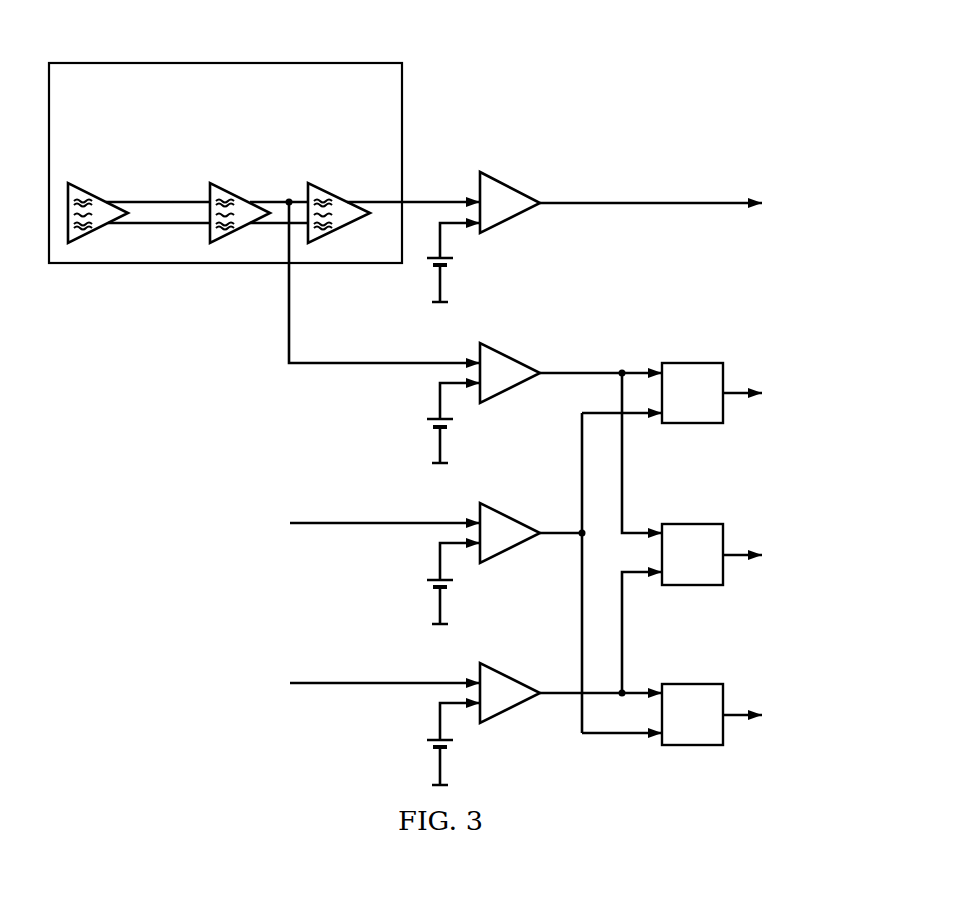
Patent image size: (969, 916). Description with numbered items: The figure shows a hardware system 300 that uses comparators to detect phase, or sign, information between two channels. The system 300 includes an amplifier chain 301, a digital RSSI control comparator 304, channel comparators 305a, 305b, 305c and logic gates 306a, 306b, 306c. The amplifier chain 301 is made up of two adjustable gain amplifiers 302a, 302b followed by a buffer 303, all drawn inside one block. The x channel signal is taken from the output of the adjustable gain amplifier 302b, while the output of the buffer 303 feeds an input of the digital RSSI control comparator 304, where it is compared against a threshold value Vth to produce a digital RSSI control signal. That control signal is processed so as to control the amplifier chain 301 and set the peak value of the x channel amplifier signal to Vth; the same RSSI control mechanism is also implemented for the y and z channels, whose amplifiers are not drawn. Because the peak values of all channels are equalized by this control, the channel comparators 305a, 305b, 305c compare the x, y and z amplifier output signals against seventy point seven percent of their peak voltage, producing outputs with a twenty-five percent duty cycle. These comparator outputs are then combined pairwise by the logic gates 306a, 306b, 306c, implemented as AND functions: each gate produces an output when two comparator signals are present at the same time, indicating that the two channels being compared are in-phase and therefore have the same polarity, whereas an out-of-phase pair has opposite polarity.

The hardware system 300 is at (742, 102).
The amplifier chain 301 is at (150, 63).
The adjustable gain amplifier 302a is at (91, 193).
The adjustable gain amplifier 302b is at (231, 193).
The buffer 303 is at (331, 193).
The digital RSSI control comparator 304 is at (511, 187).
The channel comparator 305a is at (512, 389).
The channel comparator 305b is at (512, 549).
The channel comparator 305c is at (512, 709).
The logic gate 306a is at (690, 423).
The logic gate 306b is at (690, 585).
The logic gate 306c is at (690, 745).